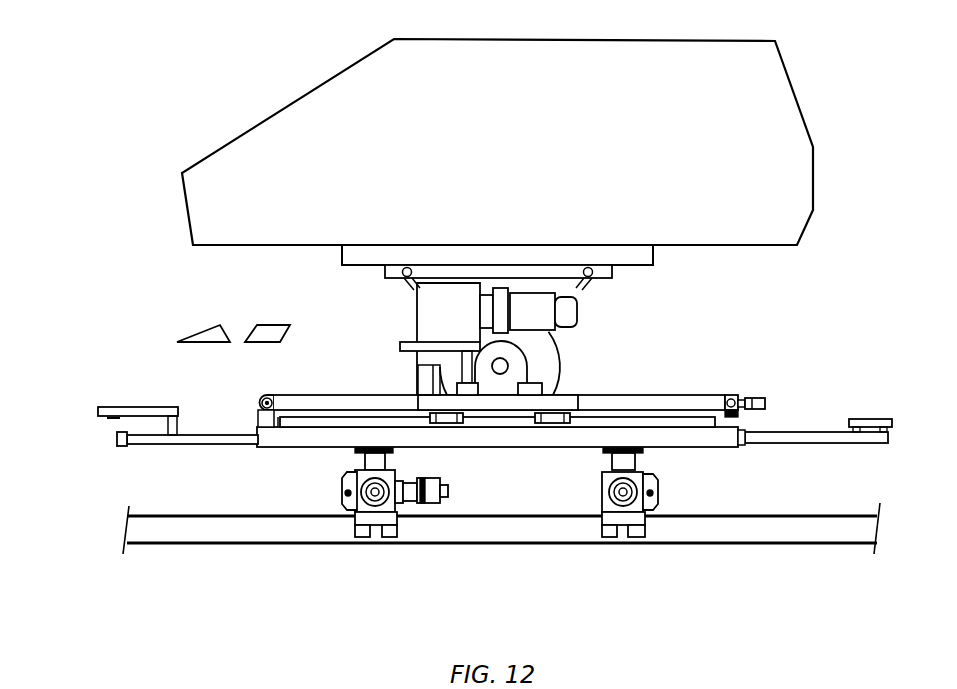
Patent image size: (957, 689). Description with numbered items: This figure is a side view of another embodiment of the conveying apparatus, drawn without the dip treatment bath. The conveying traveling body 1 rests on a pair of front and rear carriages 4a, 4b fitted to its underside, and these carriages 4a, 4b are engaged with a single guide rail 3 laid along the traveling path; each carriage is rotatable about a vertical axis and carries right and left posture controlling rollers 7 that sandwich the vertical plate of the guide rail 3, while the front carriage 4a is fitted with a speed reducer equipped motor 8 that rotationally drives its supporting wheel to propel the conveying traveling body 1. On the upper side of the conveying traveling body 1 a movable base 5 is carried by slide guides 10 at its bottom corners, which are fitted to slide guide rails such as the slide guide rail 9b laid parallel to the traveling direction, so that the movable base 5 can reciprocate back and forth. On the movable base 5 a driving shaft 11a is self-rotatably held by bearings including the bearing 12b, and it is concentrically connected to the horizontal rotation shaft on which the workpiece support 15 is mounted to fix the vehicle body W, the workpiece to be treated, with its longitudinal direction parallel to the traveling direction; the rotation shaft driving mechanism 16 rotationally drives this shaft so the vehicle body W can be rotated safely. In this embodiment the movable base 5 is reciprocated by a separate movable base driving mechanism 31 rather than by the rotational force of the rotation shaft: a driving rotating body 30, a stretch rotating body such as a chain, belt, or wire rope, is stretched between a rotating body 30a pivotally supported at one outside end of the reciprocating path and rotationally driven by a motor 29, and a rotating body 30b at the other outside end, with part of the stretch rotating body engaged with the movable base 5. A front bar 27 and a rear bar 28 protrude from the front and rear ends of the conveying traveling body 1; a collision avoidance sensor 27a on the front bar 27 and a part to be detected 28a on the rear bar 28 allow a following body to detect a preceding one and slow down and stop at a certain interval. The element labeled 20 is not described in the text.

The vehicle body W is at (553, 120).
The conveying traveling body 1 is at (688, 452).
The guide rail 3 is at (236, 533).
The front carriage 4a is at (337, 495).
The rear carriage 4b is at (592, 495).
The movable base 5 is at (427, 403).
The posture controlling rollers 7 is at (388, 538).
The speed reducer equipped motor 8 is at (430, 503).
The slide guide rail 9b is at (625, 394).
The slide guides 10 is at (541, 424).
The driving shaft 11a is at (498, 364).
The bearing 12b is at (480, 364).
The workpiece support 15 is at (579, 240).
The rotation shaft driving mechanism 16 is at (527, 280).
The motor 20 is at (563, 310).
The front bar 27 is at (190, 445).
The collision avoidance sensor 27a is at (106, 418).
The rear bar 28 is at (800, 437).
The part to be detected 28a is at (886, 419).
The motor 29 is at (757, 398).
The driving rotating body 30 is at (319, 395).
The rotating body 30a is at (734, 394).
The rotating body 30b is at (258, 403).
The movable base driving mechanism 31 is at (719, 390).